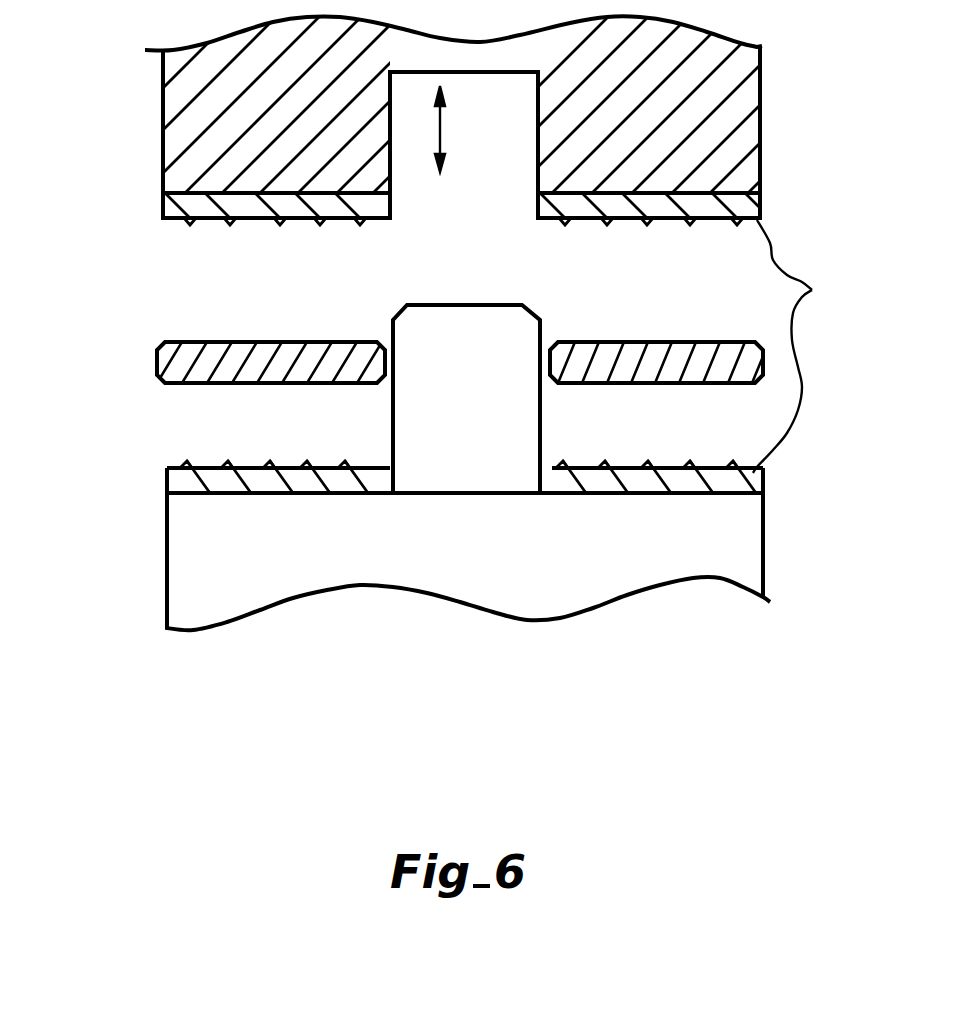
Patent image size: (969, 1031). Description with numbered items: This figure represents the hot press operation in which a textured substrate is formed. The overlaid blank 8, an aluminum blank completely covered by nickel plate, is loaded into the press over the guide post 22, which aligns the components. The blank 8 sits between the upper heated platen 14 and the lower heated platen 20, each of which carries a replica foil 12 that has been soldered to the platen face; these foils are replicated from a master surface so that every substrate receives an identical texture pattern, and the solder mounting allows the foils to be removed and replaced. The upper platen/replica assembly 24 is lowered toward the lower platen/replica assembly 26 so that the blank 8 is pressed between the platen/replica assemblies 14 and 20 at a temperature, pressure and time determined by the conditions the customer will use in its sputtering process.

The overlaid blank 8 is at (180, 363).
The replica foil 12 is at (804, 346).
The upper heated platen 14 is at (697, 113).
The lower heated platen 20 is at (732, 538).
The guide post 22 is at (452, 418).
The upper die assembly 24 is at (489, 112).
The lower die assembly 26 is at (441, 487).